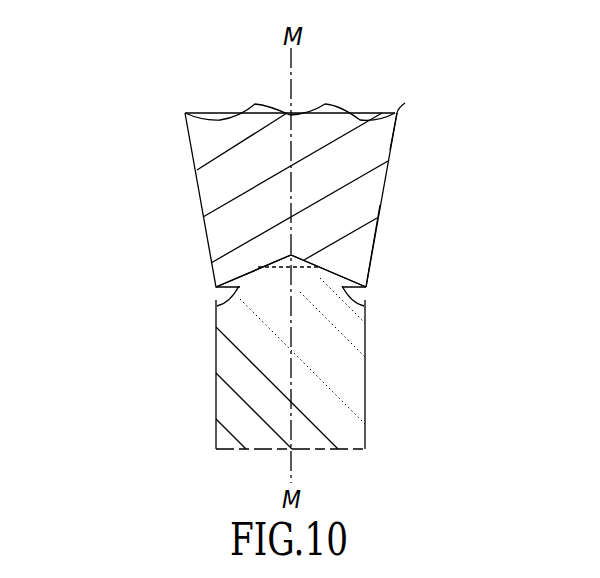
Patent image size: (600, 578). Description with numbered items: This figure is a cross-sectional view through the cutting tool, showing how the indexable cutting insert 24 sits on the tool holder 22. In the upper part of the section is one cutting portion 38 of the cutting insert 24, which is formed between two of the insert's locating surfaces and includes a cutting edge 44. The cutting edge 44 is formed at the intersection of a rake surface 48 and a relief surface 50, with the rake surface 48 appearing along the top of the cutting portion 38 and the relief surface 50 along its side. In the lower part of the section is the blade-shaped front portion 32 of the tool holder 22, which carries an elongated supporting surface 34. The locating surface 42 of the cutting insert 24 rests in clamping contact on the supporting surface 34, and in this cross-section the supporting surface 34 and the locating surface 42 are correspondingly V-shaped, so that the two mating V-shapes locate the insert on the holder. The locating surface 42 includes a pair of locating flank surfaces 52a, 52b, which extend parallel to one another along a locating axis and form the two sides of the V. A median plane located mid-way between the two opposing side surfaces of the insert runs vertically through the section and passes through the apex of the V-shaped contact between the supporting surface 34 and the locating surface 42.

The tool holder 22 is at (334, 436).
The indexable cutting insert 24 is at (210, 138).
The blade-shaped front portion 32 is at (243, 419).
The elongated supporting surface 34 is at (252, 273).
The cutting portion 38 is at (237, 183).
The locating surface 42 is at (326, 290).
The cutting edge 44 is at (397, 113).
The rake surface 48 is at (330, 103).
The relief surface 50 is at (385, 202).
The locating flank surface 52a is at (365, 310).
The locating flank surface 52b is at (217, 309).